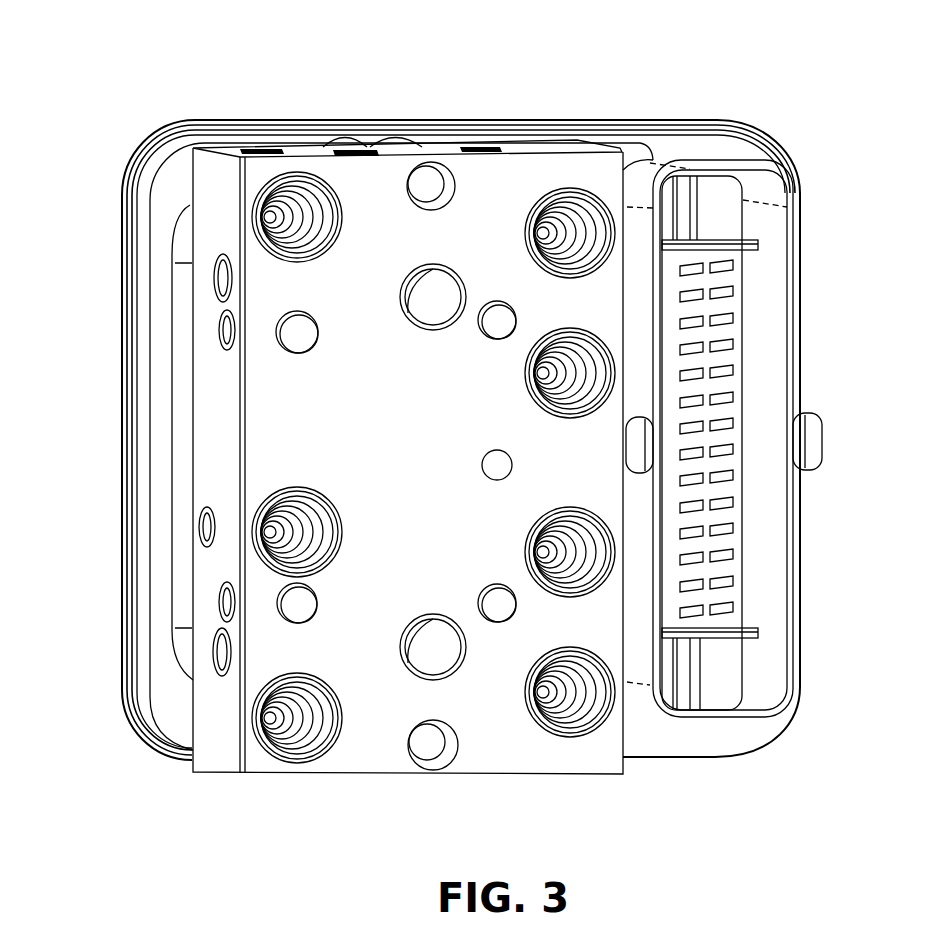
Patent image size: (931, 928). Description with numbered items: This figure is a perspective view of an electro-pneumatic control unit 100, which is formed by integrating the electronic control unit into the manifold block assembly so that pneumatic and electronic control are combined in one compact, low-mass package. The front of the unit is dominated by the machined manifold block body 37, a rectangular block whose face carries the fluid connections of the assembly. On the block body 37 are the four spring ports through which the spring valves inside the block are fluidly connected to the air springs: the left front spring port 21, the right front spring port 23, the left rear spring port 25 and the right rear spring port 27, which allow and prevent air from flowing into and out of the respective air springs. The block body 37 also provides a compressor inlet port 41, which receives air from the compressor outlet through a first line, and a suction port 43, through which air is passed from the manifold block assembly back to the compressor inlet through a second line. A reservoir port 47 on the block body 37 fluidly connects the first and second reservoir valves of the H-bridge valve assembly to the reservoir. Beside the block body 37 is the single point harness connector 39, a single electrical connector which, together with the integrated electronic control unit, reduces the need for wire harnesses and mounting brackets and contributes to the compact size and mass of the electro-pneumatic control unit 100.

The electro-pneumatic control unit 100 is at (76, 116).
The manifold block body 37 is at (511, 172).
The single point harness connector 39 is at (810, 377).
The compressor inlet port 41 is at (296, 195).
The suction port 43 is at (304, 735).
The reservoir port 47 is at (278, 526).
The left front spring port 21 is at (582, 222).
The right front spring port 23 is at (574, 350).
The left rear spring port 25 is at (583, 543).
The right rear spring port 27 is at (584, 710).